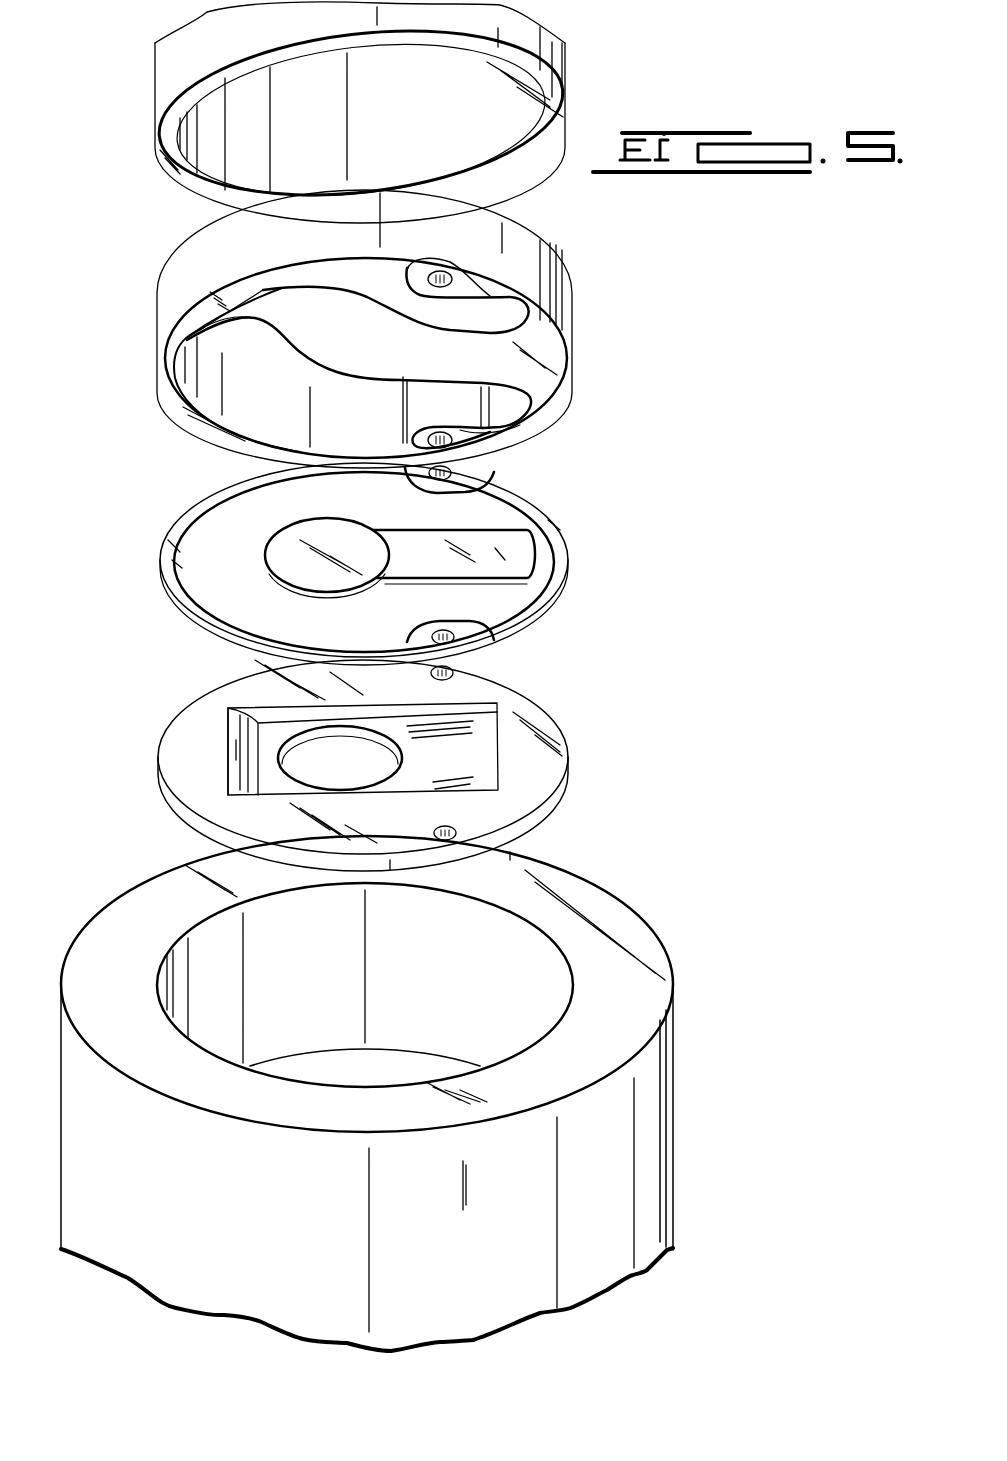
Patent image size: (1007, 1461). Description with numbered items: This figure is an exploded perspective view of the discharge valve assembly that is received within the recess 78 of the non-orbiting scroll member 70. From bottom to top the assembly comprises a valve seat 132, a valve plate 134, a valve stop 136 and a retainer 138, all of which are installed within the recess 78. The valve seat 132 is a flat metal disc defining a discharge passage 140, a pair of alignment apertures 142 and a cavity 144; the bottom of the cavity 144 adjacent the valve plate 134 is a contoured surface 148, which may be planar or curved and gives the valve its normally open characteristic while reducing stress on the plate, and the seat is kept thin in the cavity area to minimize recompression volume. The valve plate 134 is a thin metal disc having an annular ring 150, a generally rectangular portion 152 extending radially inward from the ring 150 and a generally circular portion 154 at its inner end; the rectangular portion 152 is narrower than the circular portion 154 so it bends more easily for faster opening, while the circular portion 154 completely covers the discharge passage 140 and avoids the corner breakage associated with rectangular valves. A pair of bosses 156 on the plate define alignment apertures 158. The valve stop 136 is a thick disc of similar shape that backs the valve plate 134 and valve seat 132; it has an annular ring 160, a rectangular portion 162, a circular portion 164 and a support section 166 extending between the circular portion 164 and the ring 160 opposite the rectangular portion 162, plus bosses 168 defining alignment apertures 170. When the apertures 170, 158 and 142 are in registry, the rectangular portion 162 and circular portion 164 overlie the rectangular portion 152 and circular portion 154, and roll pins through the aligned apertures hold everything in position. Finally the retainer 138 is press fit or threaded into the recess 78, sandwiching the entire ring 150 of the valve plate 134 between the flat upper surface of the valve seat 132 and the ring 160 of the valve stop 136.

The non-orbiting scroll member 70 is at (645, 1097).
The recess 78 is at (530, 938).
The valve seat 132 is at (525, 808).
The valve plate 134 is at (562, 566).
The valve stop 136 is at (188, 252).
The retainer 138 is at (186, 49).
The discharge passage 140 is at (353, 772).
The alignment apertures 142 is at (455, 673).
The cavity 144 is at (485, 710).
The contoured surface 148 is at (273, 778).
The annular ring 150 is at (180, 603).
The rectangular portion 152 is at (490, 553).
The circular portion 154 is at (283, 556).
The bosses 156 is at (495, 478).
The alignment apertures 158 is at (452, 473).
The annular ring 160 is at (175, 402).
The rectangular portion 162 is at (467, 338).
The circular portion 164 is at (370, 341).
The support section 166 is at (217, 314).
The bosses 168 is at (470, 290).
The alignment apertures 170 is at (447, 273).